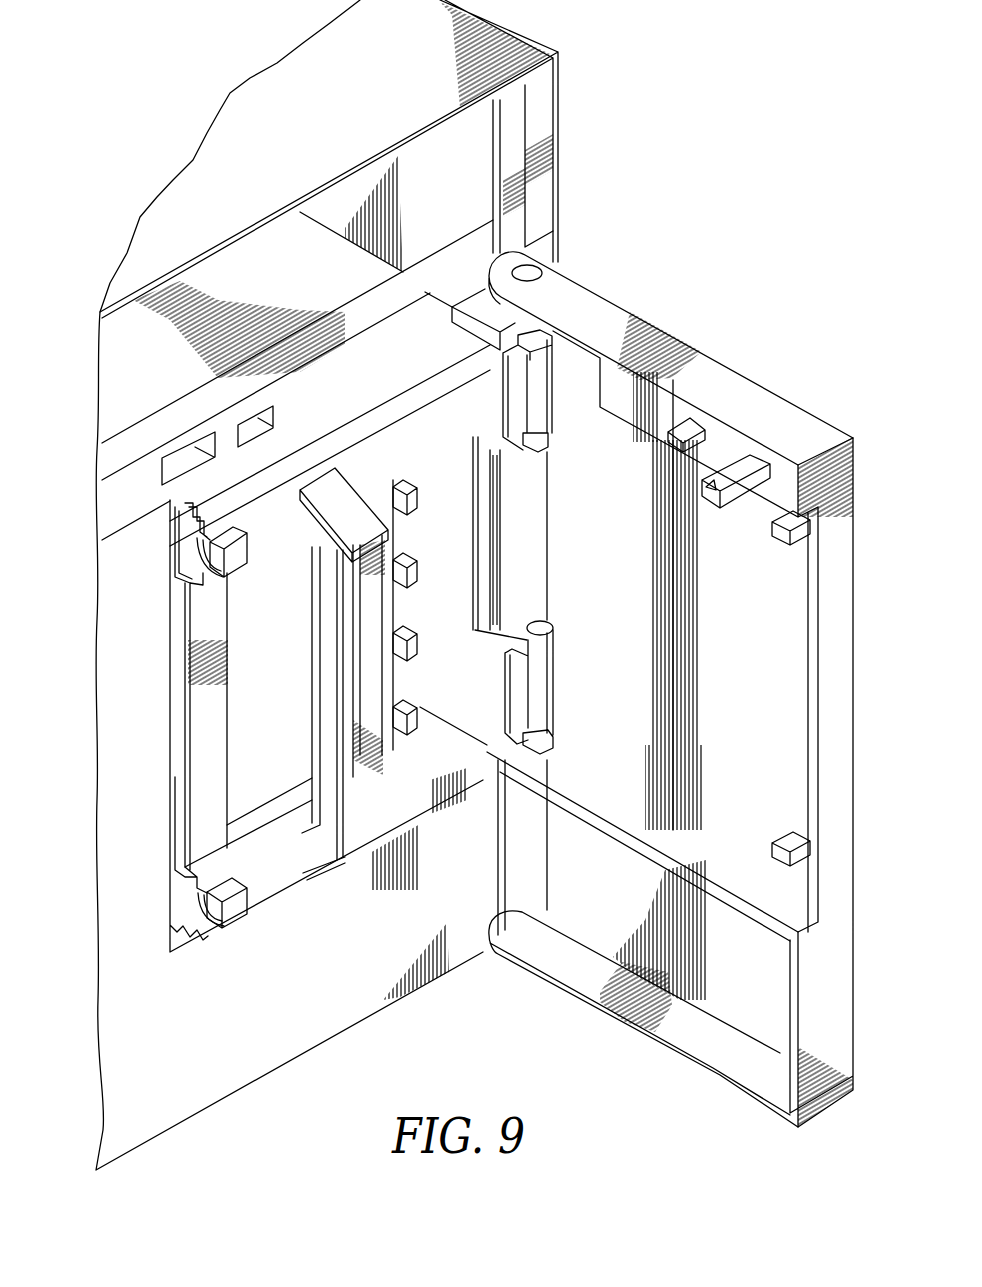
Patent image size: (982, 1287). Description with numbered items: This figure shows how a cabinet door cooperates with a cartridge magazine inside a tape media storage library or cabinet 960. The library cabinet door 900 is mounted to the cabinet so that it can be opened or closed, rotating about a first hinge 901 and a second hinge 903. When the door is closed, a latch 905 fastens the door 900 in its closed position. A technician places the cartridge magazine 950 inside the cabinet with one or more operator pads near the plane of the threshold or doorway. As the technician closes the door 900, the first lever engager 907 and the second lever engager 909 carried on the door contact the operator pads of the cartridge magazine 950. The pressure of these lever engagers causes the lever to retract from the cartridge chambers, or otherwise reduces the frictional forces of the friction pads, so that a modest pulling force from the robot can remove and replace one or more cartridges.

The cabinet 960 is at (616, 158).
The cabinet door 900 is at (747, 335).
The first hinge 901 is at (557, 407).
The second hinge 903 is at (557, 683).
The latch 905 is at (750, 483).
The first lever engager 907 is at (787, 537).
The second lever engager 909 is at (788, 842).
The cartridge magazine 950 is at (272, 884).